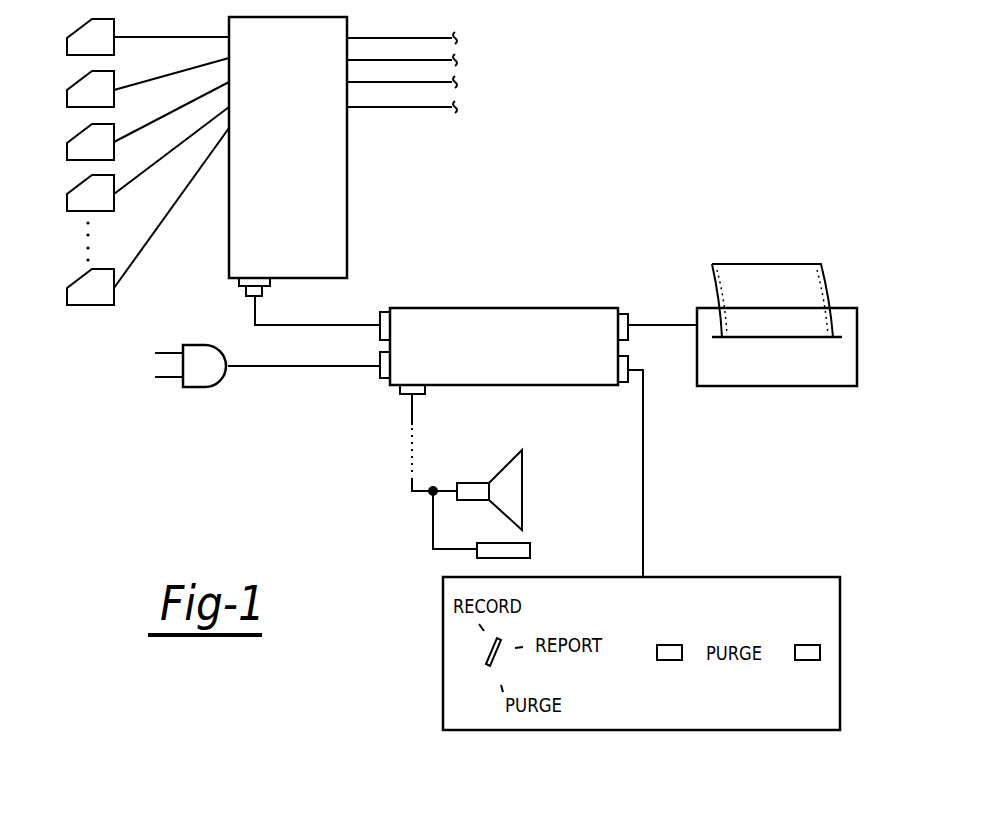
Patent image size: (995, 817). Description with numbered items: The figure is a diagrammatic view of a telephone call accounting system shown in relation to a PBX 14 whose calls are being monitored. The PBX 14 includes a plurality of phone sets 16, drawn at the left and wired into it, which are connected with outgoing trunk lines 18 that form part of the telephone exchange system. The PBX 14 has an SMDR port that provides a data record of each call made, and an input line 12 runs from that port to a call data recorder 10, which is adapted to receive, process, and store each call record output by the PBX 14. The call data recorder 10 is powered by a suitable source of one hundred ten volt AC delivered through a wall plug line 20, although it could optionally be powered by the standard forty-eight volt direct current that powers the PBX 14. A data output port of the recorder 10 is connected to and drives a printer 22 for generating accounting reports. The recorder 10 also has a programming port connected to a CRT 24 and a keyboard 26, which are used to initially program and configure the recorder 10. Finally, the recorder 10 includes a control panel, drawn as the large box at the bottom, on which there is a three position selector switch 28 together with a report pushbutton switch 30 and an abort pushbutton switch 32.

The call data recorder 10 is at (566, 262).
The input line 12 is at (332, 325).
The PBX 14 is at (347, 195).
The phone sets 16 is at (153, 152).
The outgoing trunk lines 18 is at (439, 56).
The wall plug line 20 is at (295, 367).
The printer 22 is at (848, 347).
The CRT 24 is at (525, 465).
The keyboard 26 is at (530, 548).
The three position selector switch 28 is at (487, 656).
The report pushbutton switch 30 is at (670, 645).
The abort pushbutton switch 32 is at (808, 645).